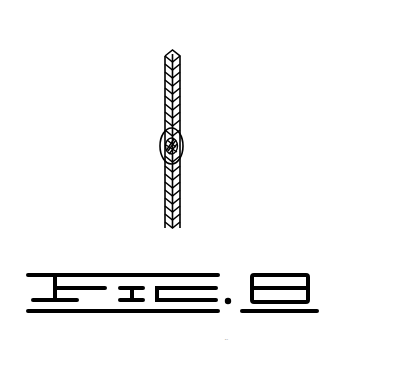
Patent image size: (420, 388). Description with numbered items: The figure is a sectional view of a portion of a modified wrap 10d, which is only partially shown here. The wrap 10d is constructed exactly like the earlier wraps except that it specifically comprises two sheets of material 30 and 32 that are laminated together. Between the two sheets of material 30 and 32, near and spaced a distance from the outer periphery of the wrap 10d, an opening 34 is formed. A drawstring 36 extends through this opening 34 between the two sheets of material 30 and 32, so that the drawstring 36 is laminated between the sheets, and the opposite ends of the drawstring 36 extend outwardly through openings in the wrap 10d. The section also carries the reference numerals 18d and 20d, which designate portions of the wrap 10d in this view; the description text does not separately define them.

The modified wrap 10d is at (163, 197).
The lower bar end 18d is at (167, 221).
The lower bar portion 20d is at (180, 205).
The sheet of material 30 is at (180, 97).
The sheet of material 32 is at (165, 75).
The opening 34 is at (180, 137).
The drawstring 36 is at (163, 155).